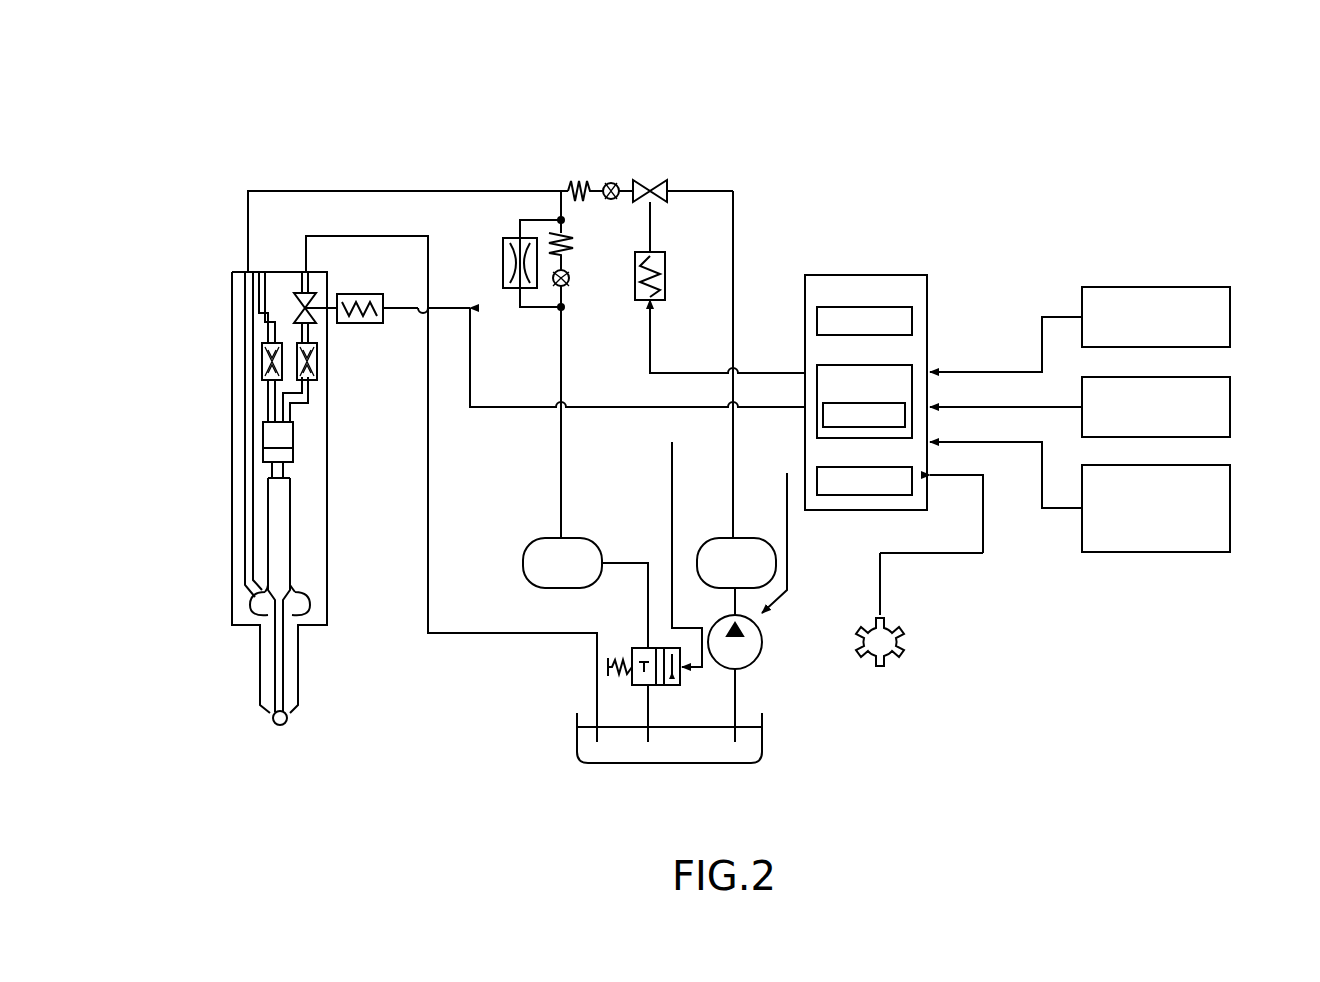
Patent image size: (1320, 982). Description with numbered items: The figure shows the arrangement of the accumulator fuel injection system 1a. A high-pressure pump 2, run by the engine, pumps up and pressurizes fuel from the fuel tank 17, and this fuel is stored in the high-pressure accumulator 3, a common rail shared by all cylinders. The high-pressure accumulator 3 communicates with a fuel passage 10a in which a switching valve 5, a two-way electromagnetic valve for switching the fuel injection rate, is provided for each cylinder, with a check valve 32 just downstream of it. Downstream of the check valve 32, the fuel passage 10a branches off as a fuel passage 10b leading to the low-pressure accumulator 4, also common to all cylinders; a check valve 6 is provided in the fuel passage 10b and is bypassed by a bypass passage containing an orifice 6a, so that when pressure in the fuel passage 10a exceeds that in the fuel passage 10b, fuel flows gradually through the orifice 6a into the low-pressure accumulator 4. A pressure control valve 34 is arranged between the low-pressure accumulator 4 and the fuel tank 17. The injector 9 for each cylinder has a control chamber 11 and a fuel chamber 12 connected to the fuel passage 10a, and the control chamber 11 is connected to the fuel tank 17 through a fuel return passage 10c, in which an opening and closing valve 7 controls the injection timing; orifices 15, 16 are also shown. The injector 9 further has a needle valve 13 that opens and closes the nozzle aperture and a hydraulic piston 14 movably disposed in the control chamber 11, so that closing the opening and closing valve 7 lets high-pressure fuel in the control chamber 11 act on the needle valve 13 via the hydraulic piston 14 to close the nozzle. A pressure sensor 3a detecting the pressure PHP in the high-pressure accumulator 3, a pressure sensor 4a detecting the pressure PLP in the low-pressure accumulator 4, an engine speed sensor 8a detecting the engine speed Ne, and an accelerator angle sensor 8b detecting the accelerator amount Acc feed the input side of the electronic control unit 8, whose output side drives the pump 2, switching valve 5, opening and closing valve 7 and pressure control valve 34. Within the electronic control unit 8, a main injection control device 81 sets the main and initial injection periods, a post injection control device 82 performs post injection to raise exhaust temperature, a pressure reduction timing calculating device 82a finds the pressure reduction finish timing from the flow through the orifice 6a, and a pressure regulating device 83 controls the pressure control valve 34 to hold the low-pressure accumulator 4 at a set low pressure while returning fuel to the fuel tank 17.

The accumulator fuel injection system 1a is at (802, 222).
The high-pressure pump 2 is at (762, 660).
The high-pressure accumulator 3 is at (720, 538).
The pressure sensor 3a is at (1230, 405).
The low-pressure accumulator 4 is at (545, 538).
The pressure sensor 4a is at (1230, 313).
The switching valve 5 is at (650, 178).
The check valve 6 is at (574, 250).
The orifice 6a is at (503, 262).
The opening and closing valve 7 is at (312, 298).
The electronic control unit 8 is at (902, 275).
The engine speed sensor 8a is at (904, 648).
The accelerator angle sensor 8b is at (1230, 497).
The injector 9 is at (232, 430).
The fuel passage 10a is at (452, 191).
The fuel passage 10b is at (563, 350).
The fuel return passage 10c is at (428, 555).
The control chamber 11 is at (290, 430).
The fuel chamber 12 is at (300, 603).
The needle valve 13 is at (285, 560).
The hydraulic piston 14 is at (283, 460).
The orifice 15 is at (282, 343).
The orifice 16 is at (318, 360).
The fuel tank 17 is at (693, 760).
The check valve 32 is at (573, 191).
The pressure control valve 34 is at (640, 648).
The main injection control device 81 is at (817, 318).
The post injection control device 82 is at (830, 365).
The pressure reduction timing calculating device 82a is at (826, 403).
The pressure regulating device 83 is at (850, 495).